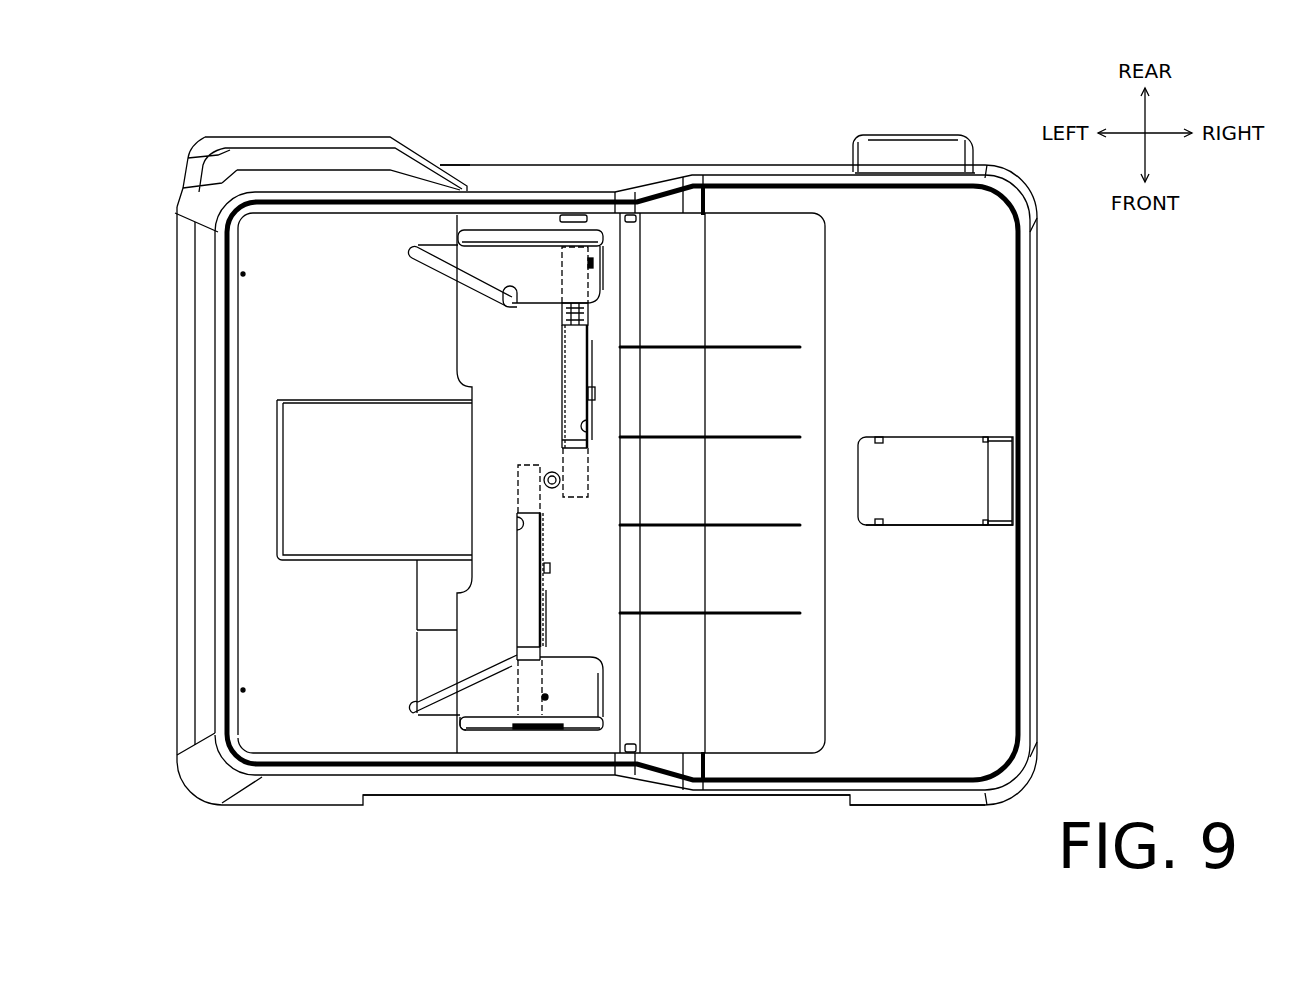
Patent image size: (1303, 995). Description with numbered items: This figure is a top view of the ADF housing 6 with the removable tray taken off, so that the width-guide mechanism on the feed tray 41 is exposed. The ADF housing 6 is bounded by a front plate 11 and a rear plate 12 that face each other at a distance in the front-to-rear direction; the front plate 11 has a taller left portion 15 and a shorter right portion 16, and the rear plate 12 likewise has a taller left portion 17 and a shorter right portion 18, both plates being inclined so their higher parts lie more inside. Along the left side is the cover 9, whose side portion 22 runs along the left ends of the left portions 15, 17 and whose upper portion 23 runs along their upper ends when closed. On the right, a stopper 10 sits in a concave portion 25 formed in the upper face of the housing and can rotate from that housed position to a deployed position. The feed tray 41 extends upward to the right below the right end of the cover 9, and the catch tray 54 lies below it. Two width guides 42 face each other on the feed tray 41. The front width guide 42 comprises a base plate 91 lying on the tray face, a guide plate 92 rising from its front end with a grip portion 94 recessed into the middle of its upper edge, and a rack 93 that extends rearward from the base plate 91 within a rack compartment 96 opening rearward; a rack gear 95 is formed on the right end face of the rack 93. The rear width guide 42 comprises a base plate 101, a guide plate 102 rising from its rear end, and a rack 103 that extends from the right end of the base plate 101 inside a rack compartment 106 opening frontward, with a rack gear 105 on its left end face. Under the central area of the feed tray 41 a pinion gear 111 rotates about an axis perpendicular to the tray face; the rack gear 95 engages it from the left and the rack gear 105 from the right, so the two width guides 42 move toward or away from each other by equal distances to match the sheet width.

The ADF housing 6 is at (582, 866).
The cover 9 is at (270, 312).
The stopper 10 is at (1005, 452).
The front plate 11 is at (728, 802).
The rear plate 12 is at (660, 150).
The left portion 15 is at (597, 797).
The right portion 16 is at (795, 797).
The left portion 17 is at (603, 178).
The right portion 18 is at (748, 172).
The side portion 22 is at (200, 409).
The upper portion 23 is at (268, 352).
The concave portion 25 is at (945, 500).
The feed tray 41 is at (608, 370).
The width guides 42 is at (607, 272).
The catch tray 54 is at (783, 240).
The base plate 91 is at (483, 685).
The guide plate 92 is at (605, 722).
The rack 93 is at (530, 588).
The grip portion 94 is at (533, 732).
The rack gear 95 is at (550, 608).
The rack compartment 96 is at (517, 513).
The base plate 101 is at (483, 290).
The guide plate 102 is at (603, 237).
The rack 103 is at (577, 370).
The rack gear 105 is at (560, 405).
The rack compartment 106 is at (588, 412).
The pinion gear 111 is at (553, 468).